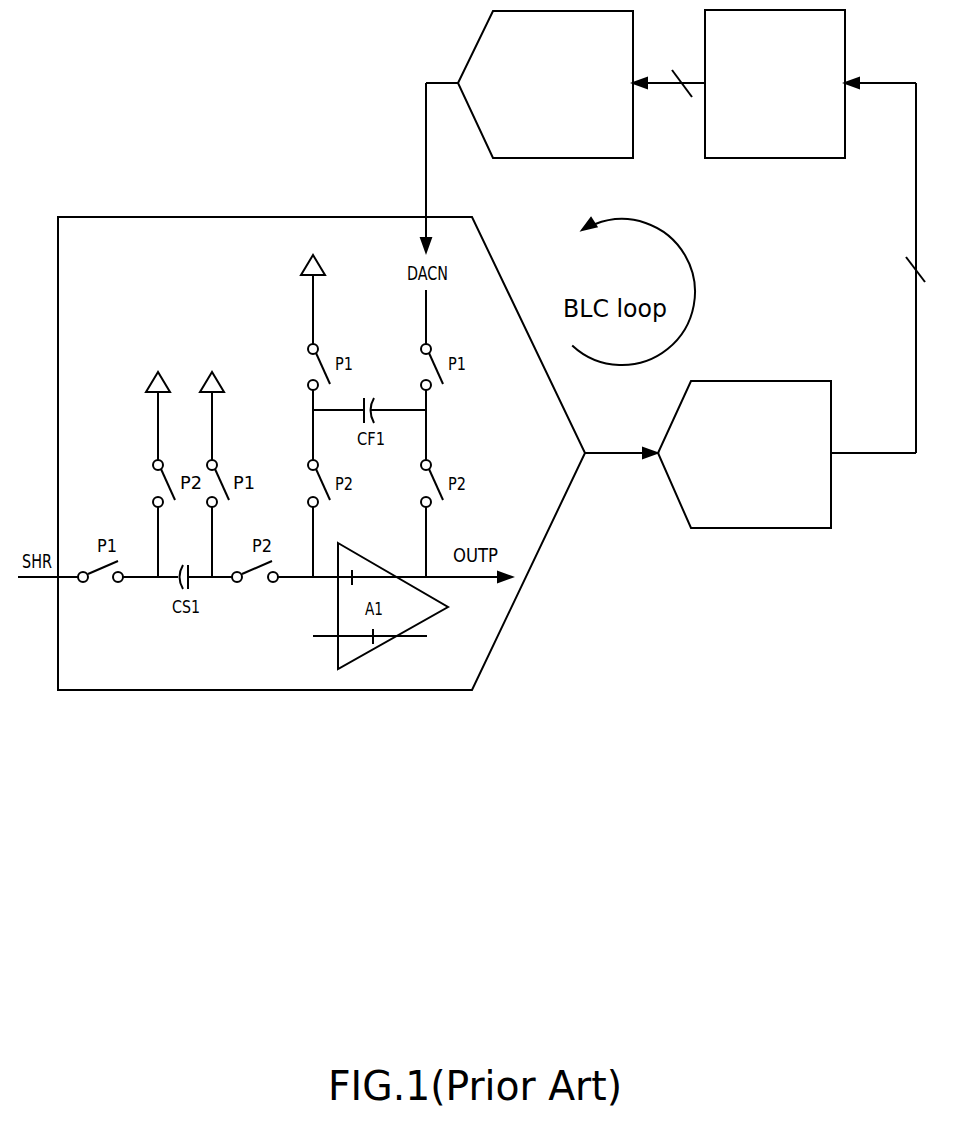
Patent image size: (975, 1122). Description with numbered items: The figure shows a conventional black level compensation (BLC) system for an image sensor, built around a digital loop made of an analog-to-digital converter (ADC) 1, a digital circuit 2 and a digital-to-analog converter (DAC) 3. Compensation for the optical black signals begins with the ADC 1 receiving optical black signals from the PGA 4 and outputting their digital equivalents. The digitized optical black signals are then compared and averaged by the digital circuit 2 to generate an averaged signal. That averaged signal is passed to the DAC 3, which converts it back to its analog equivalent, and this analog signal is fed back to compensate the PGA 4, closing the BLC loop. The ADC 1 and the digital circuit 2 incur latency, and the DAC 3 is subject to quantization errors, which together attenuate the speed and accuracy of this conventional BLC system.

The analog-to-digital converter (ADC) 1 is at (752, 482).
The digital circuit 2 is at (784, 131).
The digital-to-analog converter (DAC) 3 is at (562, 116).
The PGA 4 is at (157, 256).